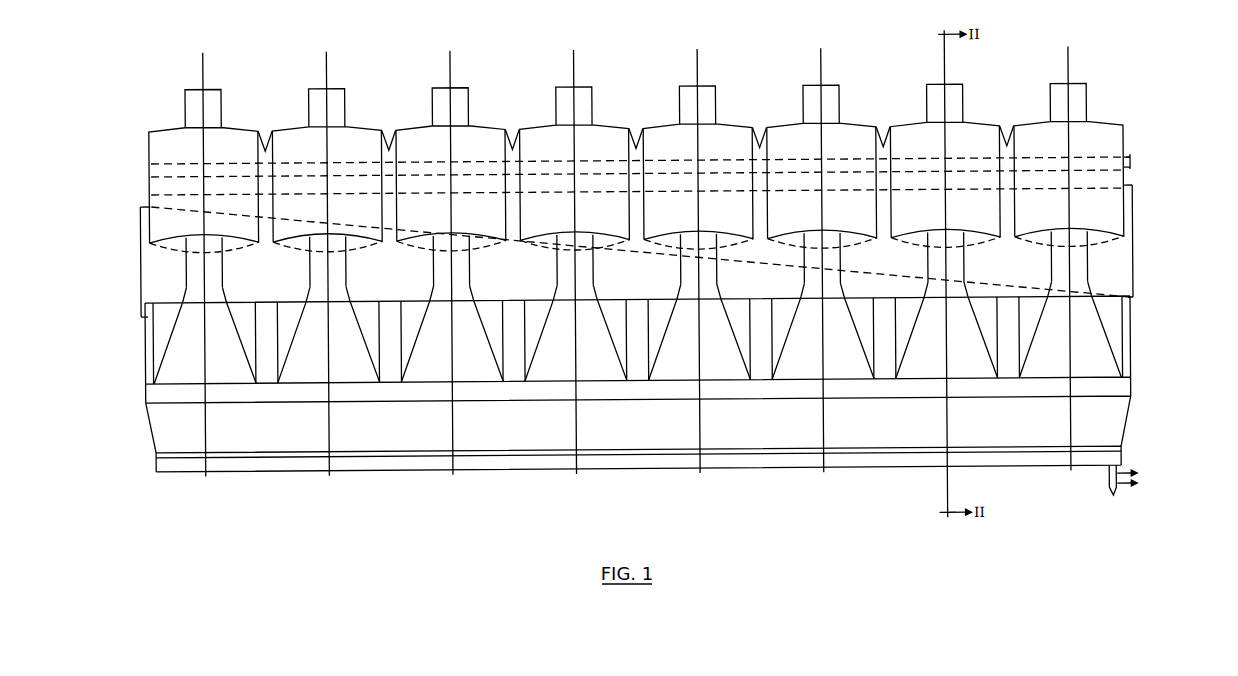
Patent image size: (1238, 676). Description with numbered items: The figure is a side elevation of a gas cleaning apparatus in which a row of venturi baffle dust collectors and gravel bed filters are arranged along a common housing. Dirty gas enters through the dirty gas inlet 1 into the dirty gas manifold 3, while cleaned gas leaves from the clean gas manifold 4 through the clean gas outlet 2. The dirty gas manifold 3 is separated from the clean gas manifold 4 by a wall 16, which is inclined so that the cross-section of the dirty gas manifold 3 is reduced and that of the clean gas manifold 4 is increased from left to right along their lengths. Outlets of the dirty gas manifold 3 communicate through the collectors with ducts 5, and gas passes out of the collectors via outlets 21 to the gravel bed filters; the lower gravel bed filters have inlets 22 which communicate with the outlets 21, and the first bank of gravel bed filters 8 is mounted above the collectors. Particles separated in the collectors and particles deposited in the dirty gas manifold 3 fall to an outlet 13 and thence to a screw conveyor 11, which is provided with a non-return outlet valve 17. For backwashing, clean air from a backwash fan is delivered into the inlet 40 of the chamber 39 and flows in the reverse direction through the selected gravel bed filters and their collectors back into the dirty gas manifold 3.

The dirty gas inlet 1 is at (152, 254).
The clean gas outlet 2 is at (1135, 265).
The dirty gas manifold 3 is at (141, 266).
The clean gas manifold 4 is at (1118, 259).
The duct 5 is at (638, 340).
The first bank of gravel bed filters 8 is at (266, 129).
The screw conveyor 11 is at (682, 462).
The outlet 13 is at (630, 454).
The wall 16 is at (357, 225).
The non-return outlet valve 17 is at (1110, 486).
The outlet 21 is at (322, 298).
The inlet 22 is at (320, 248).
The chamber 39 is at (640, 166).
The inlet 40 is at (1132, 167).